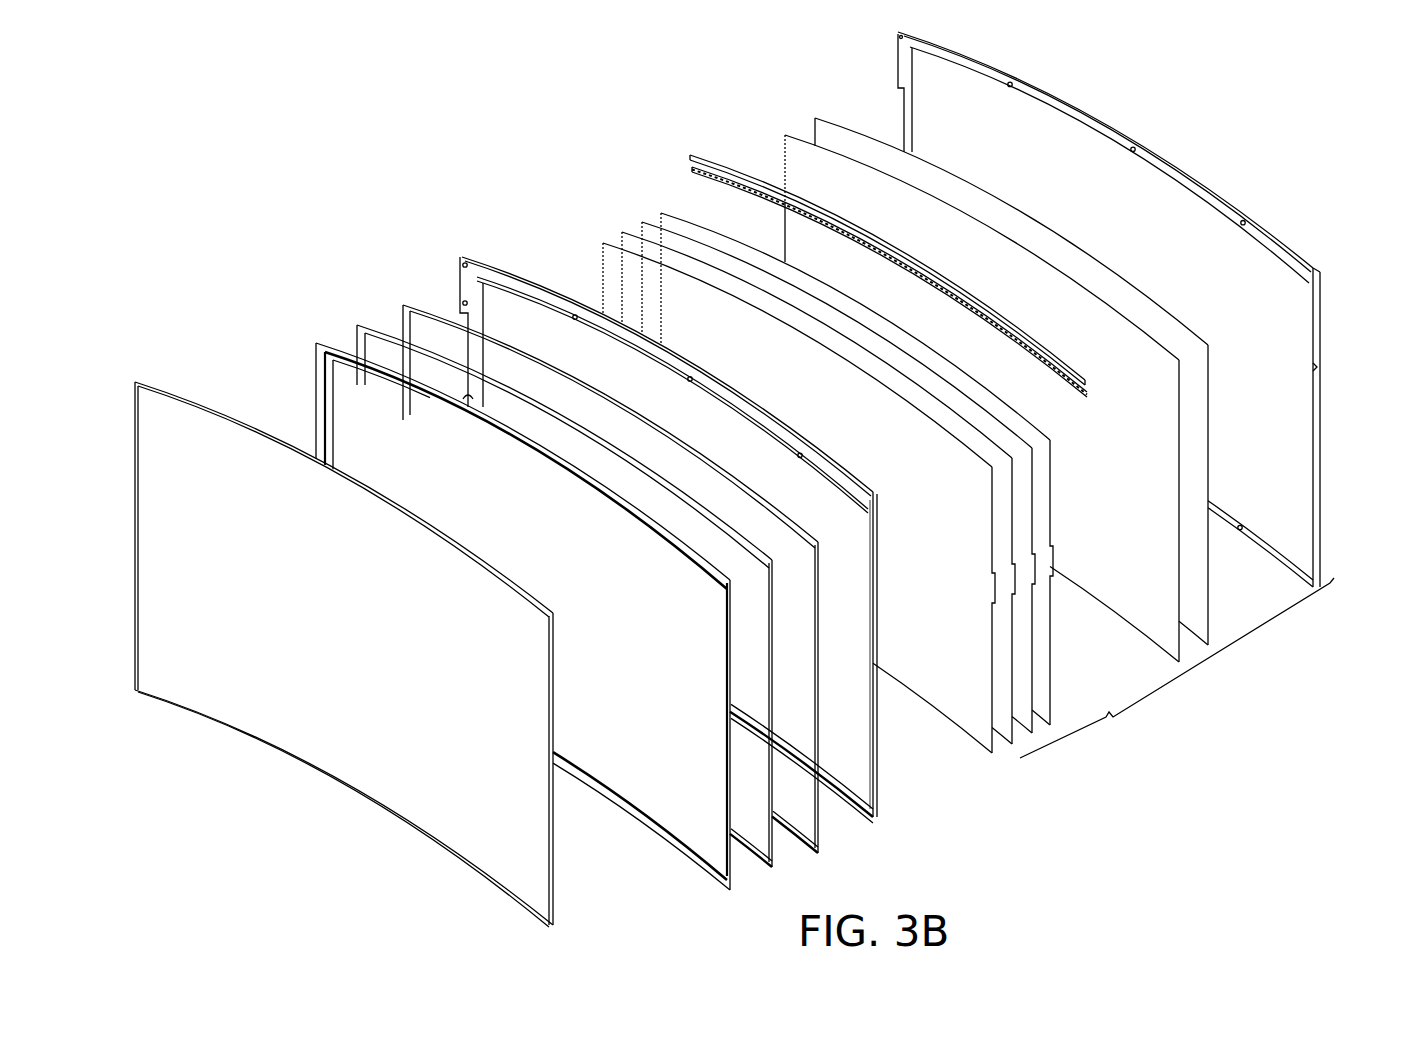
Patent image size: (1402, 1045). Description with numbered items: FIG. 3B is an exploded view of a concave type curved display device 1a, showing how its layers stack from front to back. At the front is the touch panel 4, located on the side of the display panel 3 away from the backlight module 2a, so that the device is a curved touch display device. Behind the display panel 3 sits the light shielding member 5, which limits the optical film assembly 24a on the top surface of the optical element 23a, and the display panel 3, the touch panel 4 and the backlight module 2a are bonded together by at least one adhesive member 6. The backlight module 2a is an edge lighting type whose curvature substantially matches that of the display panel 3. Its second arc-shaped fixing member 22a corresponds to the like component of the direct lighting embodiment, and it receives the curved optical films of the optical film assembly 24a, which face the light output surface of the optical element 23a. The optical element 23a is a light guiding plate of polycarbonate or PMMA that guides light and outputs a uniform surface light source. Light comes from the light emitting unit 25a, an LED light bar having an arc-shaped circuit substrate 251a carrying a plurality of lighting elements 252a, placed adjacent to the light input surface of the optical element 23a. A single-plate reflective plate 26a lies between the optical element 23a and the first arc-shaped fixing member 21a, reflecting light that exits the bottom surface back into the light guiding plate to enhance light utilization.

The display device 1a is at (352, 118).
The backlight module 2a is at (1177, 669).
The display panel 3 is at (322, 340).
The touch panel 4 is at (190, 396).
The light shielding member 5 is at (415, 303).
The adhesive member 6 is at (366, 322).
The first arc-shaped fixing member 21a is at (1190, 165).
The middle frame 22a is at (499, 270).
The optical element 23a is at (792, 132).
The optical film assembly 24a is at (668, 207).
The light emitting unit 25a is at (845, 234).
The substrate 251a is at (690, 156).
The lighting elements 252a is at (849, 259).
The reflective plate 26a is at (840, 132).